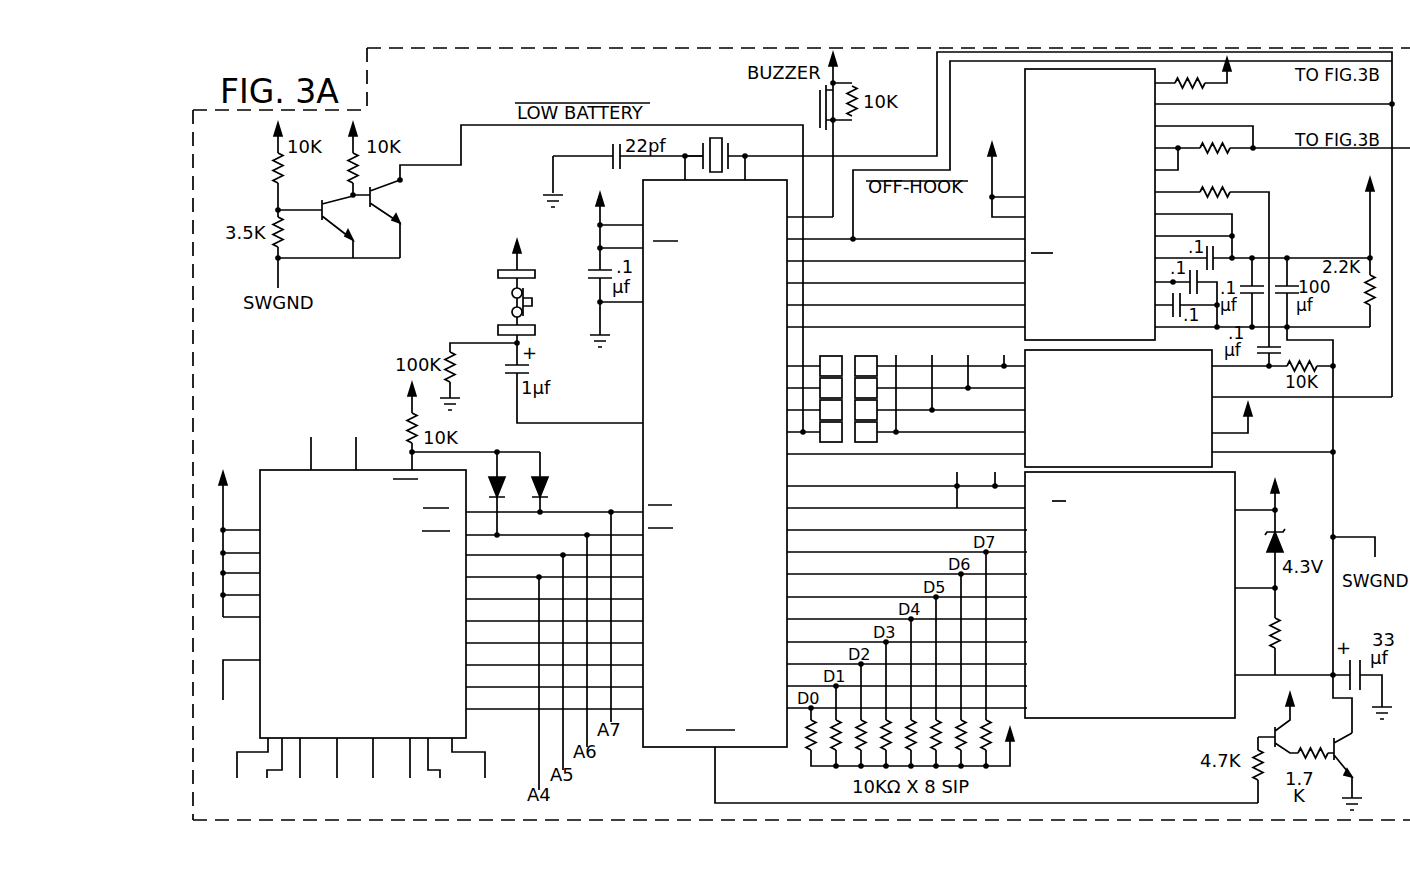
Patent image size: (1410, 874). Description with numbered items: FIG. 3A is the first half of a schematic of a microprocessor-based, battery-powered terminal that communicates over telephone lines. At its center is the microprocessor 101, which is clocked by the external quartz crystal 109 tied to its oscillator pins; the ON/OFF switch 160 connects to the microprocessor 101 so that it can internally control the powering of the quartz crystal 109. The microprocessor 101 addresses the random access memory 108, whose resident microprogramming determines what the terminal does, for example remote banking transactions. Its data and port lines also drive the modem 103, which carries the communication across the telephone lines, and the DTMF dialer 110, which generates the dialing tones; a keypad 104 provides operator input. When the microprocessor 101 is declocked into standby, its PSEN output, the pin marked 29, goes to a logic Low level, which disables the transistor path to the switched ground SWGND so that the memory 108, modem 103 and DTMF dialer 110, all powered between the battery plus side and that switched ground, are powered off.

The microprocessor 101 is at (672, 748).
The modem 103 is at (1023, 143).
The keypad assembly 104 is at (867, 355).
The random access memory 108 is at (288, 469).
The quartz crystal 109 is at (716, 137).
The DTMF dialer 110 is at (1212, 459).
The ON/OFF switch 160 is at (510, 307).
The PSEN pin 29 is at (986, 775).